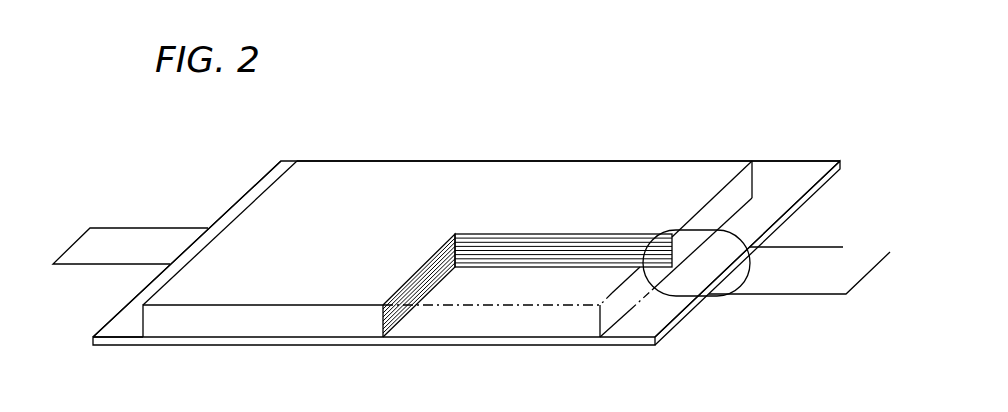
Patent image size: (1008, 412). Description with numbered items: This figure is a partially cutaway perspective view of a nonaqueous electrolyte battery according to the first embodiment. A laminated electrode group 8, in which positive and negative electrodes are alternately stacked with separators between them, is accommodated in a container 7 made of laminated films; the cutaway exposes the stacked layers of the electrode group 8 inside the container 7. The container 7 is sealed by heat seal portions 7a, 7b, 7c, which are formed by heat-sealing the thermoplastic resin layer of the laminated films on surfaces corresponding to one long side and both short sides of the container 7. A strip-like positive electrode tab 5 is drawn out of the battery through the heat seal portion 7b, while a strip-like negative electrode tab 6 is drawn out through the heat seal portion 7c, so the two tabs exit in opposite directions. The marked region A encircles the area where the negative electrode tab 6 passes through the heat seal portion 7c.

The positive electrode tab 5 is at (93, 250).
The negative electrode tab 6 is at (795, 284).
The container 7 is at (653, 178).
The heat seal portion 7a is at (760, 170).
The heat seal portion 7b is at (124, 328).
The heat seal portion 7c is at (797, 183).
The laminated electrode group 8 is at (511, 282).
The detail region A is at (710, 300).